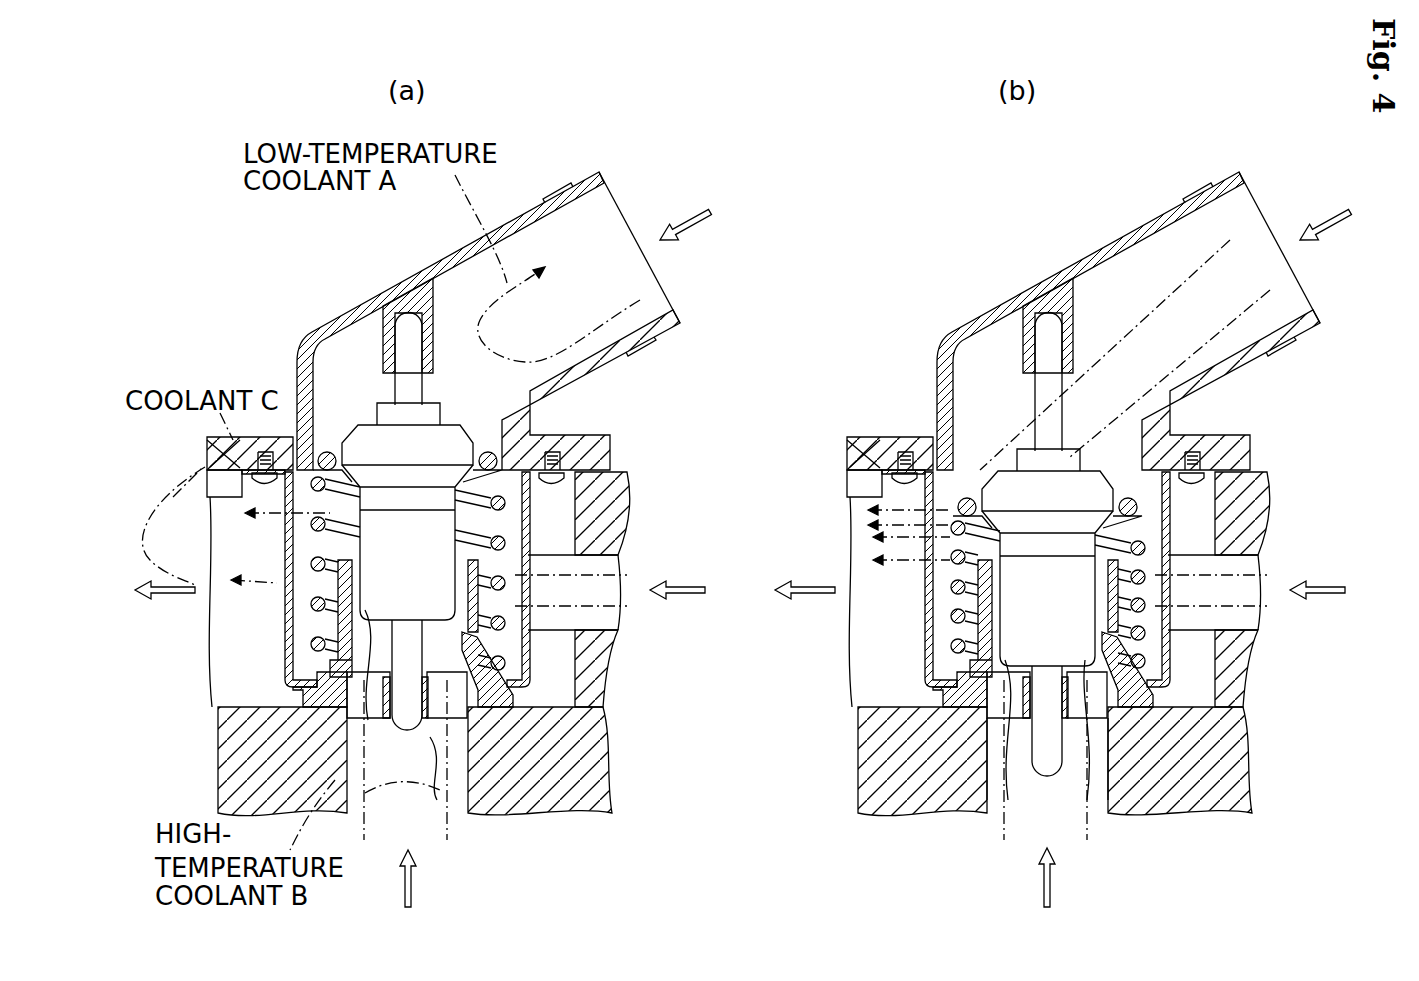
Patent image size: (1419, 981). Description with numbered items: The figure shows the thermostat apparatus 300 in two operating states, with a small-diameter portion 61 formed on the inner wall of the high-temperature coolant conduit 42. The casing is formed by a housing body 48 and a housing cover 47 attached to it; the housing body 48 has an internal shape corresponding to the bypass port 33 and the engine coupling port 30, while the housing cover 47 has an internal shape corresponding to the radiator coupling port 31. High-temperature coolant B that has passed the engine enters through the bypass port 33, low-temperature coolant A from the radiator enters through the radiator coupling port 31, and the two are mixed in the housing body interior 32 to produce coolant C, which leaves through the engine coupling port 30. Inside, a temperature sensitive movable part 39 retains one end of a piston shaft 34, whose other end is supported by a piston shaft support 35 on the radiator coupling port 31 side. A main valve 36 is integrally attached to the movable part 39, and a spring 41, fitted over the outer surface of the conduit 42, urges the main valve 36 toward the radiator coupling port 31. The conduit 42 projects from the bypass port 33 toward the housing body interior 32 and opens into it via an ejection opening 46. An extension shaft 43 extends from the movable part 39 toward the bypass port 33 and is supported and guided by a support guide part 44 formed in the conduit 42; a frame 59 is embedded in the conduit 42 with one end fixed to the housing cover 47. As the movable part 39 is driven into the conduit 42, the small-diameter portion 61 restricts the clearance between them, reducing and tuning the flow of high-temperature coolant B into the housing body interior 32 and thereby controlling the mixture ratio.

The thermostat apparatus 300 is at (266, 336).
The engine coupling port 30 is at (228, 650).
The radiator coupling port 31 is at (540, 402).
The housing body interior 32 is at (570, 522).
The bypass port 33 is at (380, 807).
The piston shaft 34 is at (408, 320).
The piston shaft support 35 is at (400, 296).
The main valve 36 is at (295, 430).
The temperature sensitive movable part 39 is at (287, 517).
The spring 41 is at (480, 630).
The high-temperature coolant conduit 42 is at (350, 617).
The extension shaft 43 is at (450, 790).
The support guide part 44 is at (380, 718).
The ejection opening 46 is at (310, 540).
The housing cover 47 is at (565, 183).
The housing body 48 is at (573, 758).
The frame 59 is at (300, 686).
The small-diameter portion 61 is at (295, 660).